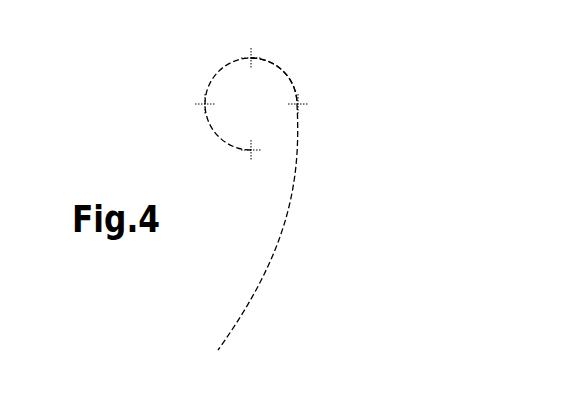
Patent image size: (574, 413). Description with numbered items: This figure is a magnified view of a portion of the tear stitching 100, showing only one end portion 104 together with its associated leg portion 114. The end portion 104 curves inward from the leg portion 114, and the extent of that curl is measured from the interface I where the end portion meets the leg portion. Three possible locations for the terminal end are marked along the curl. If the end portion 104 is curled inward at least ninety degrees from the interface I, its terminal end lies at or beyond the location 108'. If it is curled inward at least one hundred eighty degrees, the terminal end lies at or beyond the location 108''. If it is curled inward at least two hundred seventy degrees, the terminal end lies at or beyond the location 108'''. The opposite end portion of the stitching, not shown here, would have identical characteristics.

The fan blade 100 is at (372, 200).
The end portion 104 is at (289, 76).
The leg portion 114 is at (263, 273).
The interface I is at (299, 105).
The terminal end location 108' is at (305, 43).
The terminal end location 108'' is at (151, 85).
The terminal end location 108''' is at (227, 174).